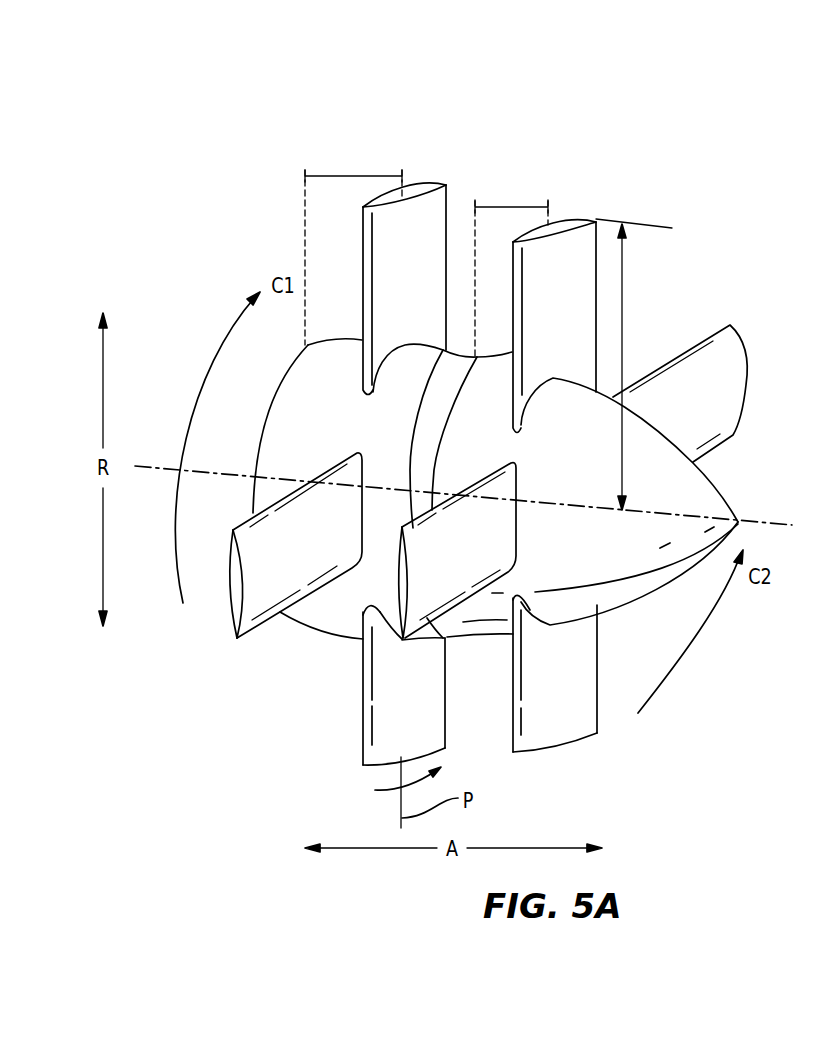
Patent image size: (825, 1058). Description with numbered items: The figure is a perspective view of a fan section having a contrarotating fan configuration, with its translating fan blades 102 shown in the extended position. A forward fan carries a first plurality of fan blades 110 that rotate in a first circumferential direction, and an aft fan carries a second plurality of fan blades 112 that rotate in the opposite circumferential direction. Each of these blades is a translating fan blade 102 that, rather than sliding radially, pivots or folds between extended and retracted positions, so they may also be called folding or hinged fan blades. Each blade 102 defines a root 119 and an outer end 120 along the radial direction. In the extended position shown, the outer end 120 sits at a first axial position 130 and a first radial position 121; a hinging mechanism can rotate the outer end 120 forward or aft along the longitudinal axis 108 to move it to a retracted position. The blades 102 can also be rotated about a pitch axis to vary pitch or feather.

The translating fan blade 102 is at (388, 712).
The longitudinal axis 108 is at (762, 522).
The first plurality of fan blades 110 is at (390, 138).
The second plurality of fan blades 112 is at (592, 182).
The root 119 is at (366, 385).
The outer end 120 is at (498, 257).
The first radial position 121 is at (623, 308).
The first axial position 130 is at (338, 175).